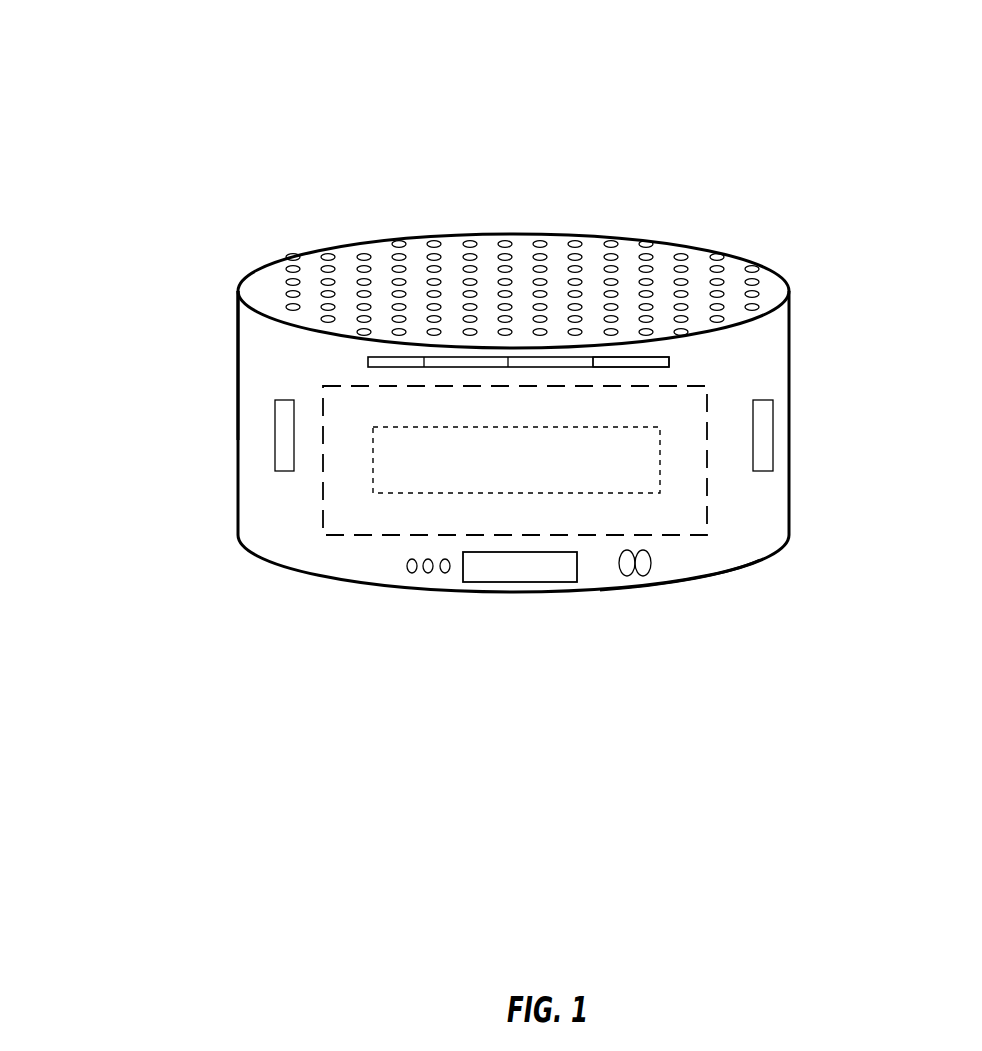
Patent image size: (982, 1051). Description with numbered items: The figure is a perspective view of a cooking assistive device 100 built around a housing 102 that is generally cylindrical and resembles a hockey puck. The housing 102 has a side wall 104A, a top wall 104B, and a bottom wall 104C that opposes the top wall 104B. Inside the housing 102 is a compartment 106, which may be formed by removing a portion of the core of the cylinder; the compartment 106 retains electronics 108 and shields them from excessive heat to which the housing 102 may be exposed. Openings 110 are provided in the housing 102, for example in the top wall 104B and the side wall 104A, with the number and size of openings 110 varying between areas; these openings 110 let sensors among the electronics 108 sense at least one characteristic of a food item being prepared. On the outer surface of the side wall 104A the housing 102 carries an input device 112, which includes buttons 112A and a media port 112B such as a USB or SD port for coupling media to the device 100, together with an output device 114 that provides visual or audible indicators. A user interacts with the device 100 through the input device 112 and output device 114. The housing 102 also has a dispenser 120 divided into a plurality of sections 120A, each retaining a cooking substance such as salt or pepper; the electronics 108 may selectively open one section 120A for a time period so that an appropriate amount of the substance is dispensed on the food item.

The cooking assistive device 100 is at (650, 142).
The housing 102 is at (763, 375).
The side wall 104A is at (272, 337).
The top wall 104B is at (773, 295).
The bottom wall 104C is at (725, 600).
The compartment 106 is at (354, 535).
The electronics 108 is at (388, 496).
The openings 110 is at (367, 257).
The input device 112 is at (452, 612).
The buttons 112A is at (436, 578).
The media port 112B is at (534, 576).
The output device 114 is at (627, 578).
The dispenser 120 is at (368, 364).
The sections 120A is at (626, 362).